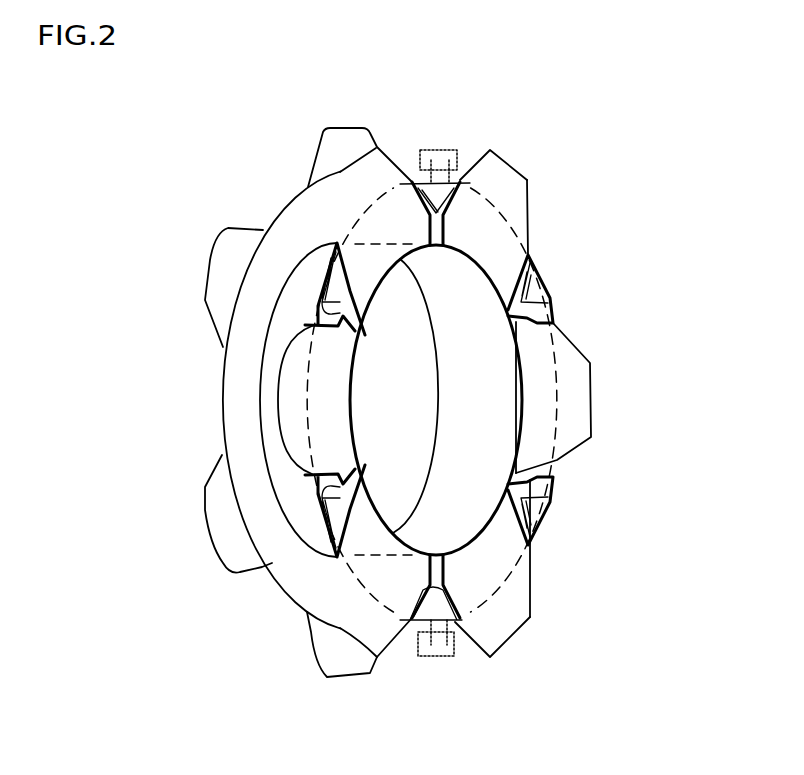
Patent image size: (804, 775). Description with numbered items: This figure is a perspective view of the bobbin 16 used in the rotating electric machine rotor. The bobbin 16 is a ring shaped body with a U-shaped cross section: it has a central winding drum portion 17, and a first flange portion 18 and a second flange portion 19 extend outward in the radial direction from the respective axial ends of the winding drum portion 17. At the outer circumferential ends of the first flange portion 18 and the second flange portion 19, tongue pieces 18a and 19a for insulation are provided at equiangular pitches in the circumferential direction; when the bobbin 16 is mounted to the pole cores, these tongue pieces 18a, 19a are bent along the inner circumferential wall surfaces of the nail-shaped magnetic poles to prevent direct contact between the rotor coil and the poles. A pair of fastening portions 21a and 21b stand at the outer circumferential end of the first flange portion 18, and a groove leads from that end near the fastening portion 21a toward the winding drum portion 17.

The bobbin 16 is at (237, 134).
The winding drum portion 17 is at (280, 460).
The first flange portion 18 is at (512, 242).
The tongue pieces 18a is at (528, 186).
The second flange portion 19 is at (294, 217).
The tongue pieces 19a is at (212, 306).
The fastening portion 21a is at (452, 156).
The fastening portion 21b is at (452, 641).